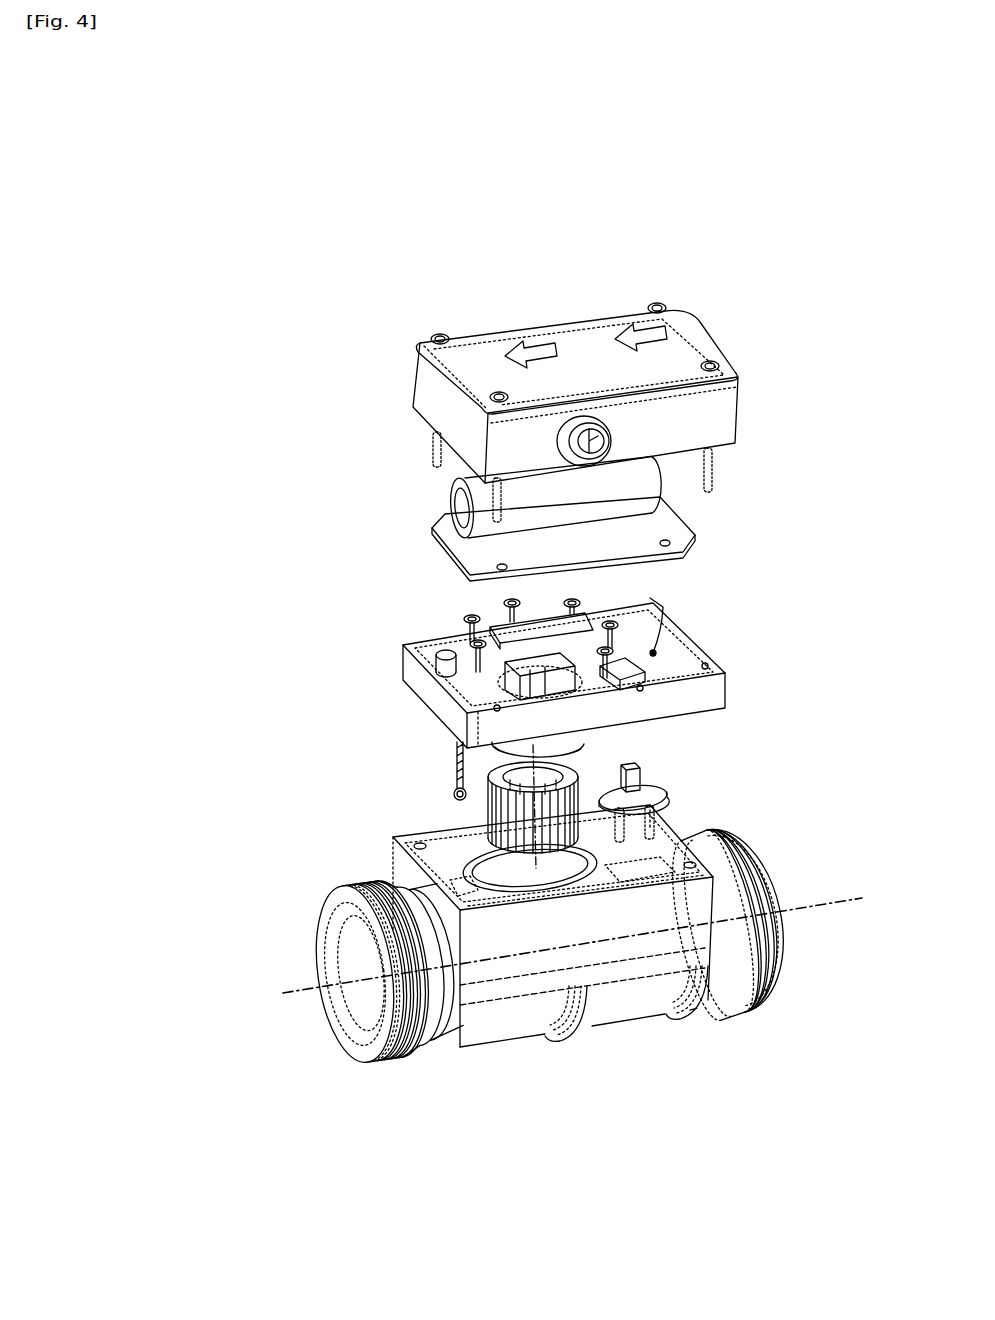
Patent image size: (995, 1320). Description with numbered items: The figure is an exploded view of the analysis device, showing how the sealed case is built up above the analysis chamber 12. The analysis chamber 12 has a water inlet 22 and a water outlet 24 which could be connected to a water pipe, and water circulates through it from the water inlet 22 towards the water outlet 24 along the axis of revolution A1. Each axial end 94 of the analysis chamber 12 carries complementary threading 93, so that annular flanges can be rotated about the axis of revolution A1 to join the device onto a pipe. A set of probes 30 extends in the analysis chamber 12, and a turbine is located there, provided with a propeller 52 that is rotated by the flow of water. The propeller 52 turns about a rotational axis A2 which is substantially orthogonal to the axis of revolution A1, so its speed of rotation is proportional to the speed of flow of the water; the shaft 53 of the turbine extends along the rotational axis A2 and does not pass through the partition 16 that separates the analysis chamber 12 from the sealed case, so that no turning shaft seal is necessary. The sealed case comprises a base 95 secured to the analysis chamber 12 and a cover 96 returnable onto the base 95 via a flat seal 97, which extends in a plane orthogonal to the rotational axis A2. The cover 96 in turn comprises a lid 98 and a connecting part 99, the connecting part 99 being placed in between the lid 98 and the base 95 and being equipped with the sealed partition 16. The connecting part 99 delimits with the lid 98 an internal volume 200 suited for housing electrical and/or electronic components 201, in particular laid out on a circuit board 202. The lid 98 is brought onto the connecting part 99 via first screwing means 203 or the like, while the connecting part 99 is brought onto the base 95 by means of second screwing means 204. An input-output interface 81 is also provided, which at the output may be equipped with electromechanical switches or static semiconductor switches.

The cover 96 is at (332, 493).
The lid 98 is at (705, 322).
The first screwing means 203 is at (655, 308).
The input-output interface 81 is at (607, 432).
The internal volume 200 is at (690, 514).
The electrical and/or electronic components 201 is at (453, 480).
The circuit board 202 is at (460, 543).
The second screwing means 204 is at (468, 617).
The connecting part 99 is at (707, 650).
The partition 16 is at (705, 652).
The shaft 53 is at (607, 750).
The set of probes 30 is at (460, 767).
The propeller 52 is at (580, 773).
The base 95 is at (673, 833).
The flat seal 97 is at (440, 830).
The analysis chamber 12 is at (597, 1030).
The complementary threading 93 is at (367, 880).
The water inlet 22 is at (347, 967).
The water outlet 24 is at (788, 891).
The axial end 94 is at (394, 1072).
The axis of revolution A1 is at (577, 938).
The rotational axis A2 is at (521, 806).